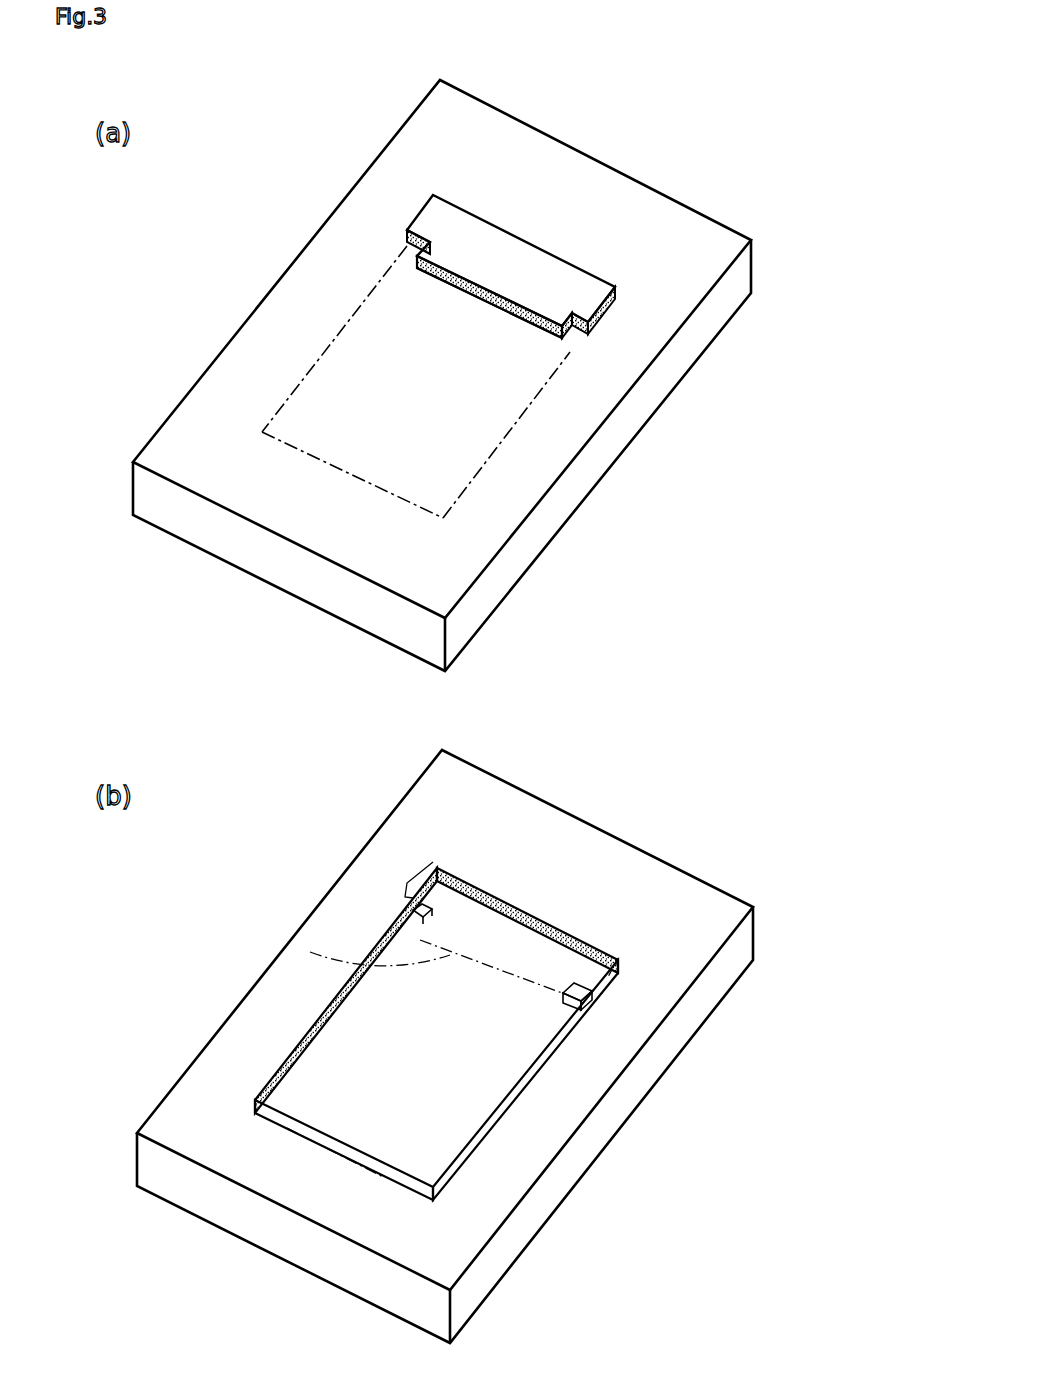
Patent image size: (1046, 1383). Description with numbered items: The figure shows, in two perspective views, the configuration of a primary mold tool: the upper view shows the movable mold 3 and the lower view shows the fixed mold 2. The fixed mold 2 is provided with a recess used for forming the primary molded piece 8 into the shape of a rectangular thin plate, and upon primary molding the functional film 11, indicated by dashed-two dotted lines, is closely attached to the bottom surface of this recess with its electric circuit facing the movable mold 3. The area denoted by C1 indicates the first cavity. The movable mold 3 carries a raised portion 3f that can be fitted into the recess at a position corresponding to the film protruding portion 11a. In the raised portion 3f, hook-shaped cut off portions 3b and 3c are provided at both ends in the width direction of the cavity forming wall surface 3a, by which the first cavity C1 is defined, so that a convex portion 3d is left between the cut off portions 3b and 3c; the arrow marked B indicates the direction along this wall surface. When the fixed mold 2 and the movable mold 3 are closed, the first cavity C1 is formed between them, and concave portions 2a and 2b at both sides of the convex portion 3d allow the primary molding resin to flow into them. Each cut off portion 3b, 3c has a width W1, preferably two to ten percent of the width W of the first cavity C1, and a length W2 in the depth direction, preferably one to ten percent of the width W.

The movable mold 3 is at (663, 366).
The raised portion 3f is at (470, 211).
The cut off portion 3b is at (403, 253).
The convex portion 3d is at (493, 277).
The cut off portion 3c is at (577, 340).
The cavity forming wall surface 3a is at (432, 277).
The direction B is at (513, 349).
The primary molded piece 8 is at (503, 440).
The width of cut off portion W1 is at (428, 242).
The length of cut off portion in the depth direction W2 is at (562, 326).
The fixed mold 2 is at (560, 1178).
The functional film 11 is at (597, 987).
The film protruding portion 11a is at (407, 885).
The concave portion 2a is at (395, 922).
The concave portion 2b is at (584, 1018).
The first cavity C1 is at (488, 1064).
The width of the first cavity W is at (440, 815).